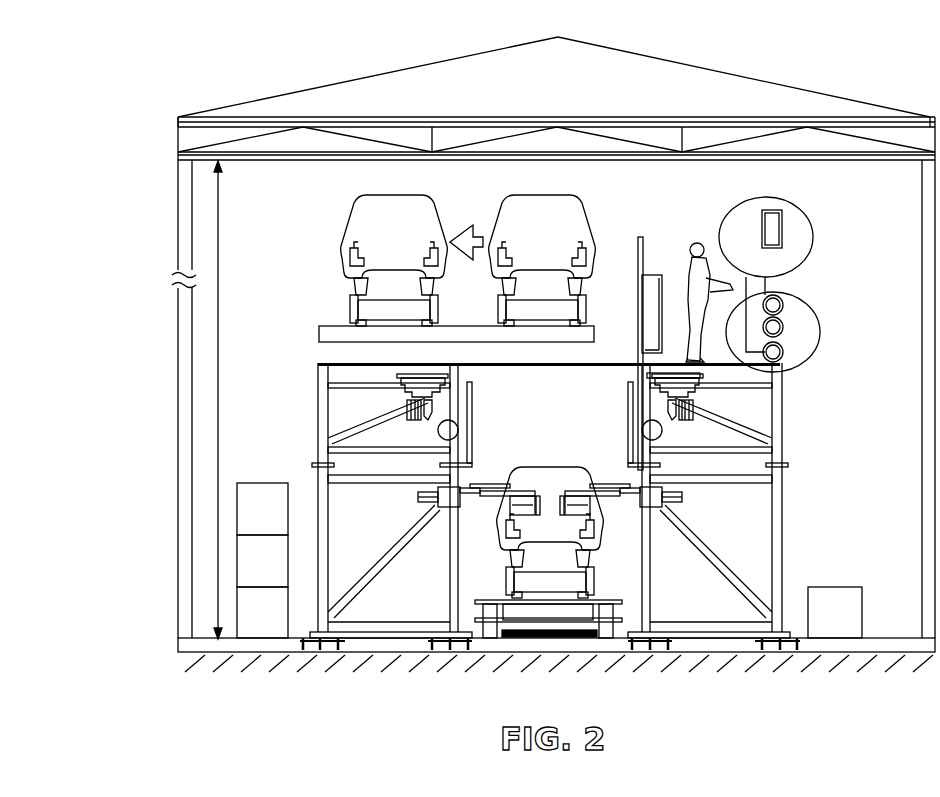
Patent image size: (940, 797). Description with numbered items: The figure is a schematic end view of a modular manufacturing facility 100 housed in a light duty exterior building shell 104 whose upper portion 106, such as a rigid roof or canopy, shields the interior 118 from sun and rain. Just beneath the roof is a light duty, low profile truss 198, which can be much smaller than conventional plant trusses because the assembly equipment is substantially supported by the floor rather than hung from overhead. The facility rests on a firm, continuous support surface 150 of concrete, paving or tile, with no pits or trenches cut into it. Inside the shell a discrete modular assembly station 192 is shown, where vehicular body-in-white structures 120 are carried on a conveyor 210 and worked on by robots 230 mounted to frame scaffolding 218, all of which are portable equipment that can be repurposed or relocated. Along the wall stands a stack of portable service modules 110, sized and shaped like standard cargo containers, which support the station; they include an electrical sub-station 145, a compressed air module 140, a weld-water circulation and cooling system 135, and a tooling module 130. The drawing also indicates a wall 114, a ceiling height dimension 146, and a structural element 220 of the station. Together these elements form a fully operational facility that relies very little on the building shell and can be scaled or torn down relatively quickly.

The modular manufacturing facility 100 is at (165, 228).
The exterior building shell 104 is at (297, 83).
The upper portion 106 is at (485, 50).
The truss 198 is at (370, 140).
The wall 114 is at (178, 378).
The ceiling height 146 is at (218, 297).
The service modules 110 is at (260, 511).
The electrical sub-station 145 is at (282, 523).
The compressed air 140 is at (282, 575).
The weld-water circulation and cooling system 135 is at (282, 627).
The tooling 130 is at (853, 627).
The support surface 150 is at (350, 655).
The modular assembly station 192 is at (446, 200).
The vehicular body-in-white structure 120 is at (577, 198).
The conveyor 210 is at (590, 320).
The interior 118 is at (716, 203).
The upper frame 220 is at (785, 425).
The frame scaffolding 218 is at (788, 512).
The robot 230 is at (488, 488).